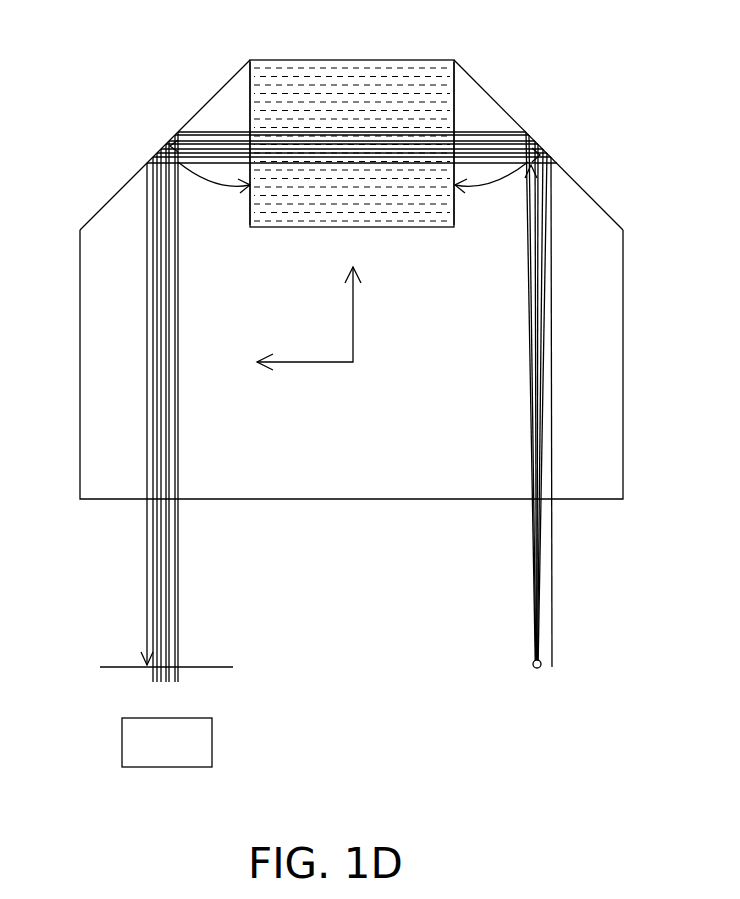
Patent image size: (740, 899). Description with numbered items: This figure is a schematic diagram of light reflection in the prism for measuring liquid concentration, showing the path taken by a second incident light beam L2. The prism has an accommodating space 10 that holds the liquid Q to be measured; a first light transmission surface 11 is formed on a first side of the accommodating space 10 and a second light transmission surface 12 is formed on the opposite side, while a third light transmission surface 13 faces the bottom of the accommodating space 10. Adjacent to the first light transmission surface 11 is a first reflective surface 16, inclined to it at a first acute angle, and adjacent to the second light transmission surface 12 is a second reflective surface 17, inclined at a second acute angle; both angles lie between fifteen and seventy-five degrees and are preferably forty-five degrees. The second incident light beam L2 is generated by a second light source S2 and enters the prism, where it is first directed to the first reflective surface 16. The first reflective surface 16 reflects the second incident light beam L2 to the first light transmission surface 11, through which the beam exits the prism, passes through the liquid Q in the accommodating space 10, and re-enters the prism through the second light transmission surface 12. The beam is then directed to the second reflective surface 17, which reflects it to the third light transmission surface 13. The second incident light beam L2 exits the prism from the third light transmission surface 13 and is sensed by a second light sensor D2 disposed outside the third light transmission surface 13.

The accommodating space 10 is at (317, 77).
The liquid Q is at (405, 77).
The first light transmission surface 11 is at (454, 95).
The second light transmission surface 12 is at (250, 97).
The third light transmission surface 13 is at (321, 499).
The first reflective surface 16 is at (587, 193).
The second reflective surface 17 is at (115, 197).
The second incident light beam L2 is at (553, 545).
The second light source S2 is at (540, 684).
The second light sensor D2 is at (130, 742).